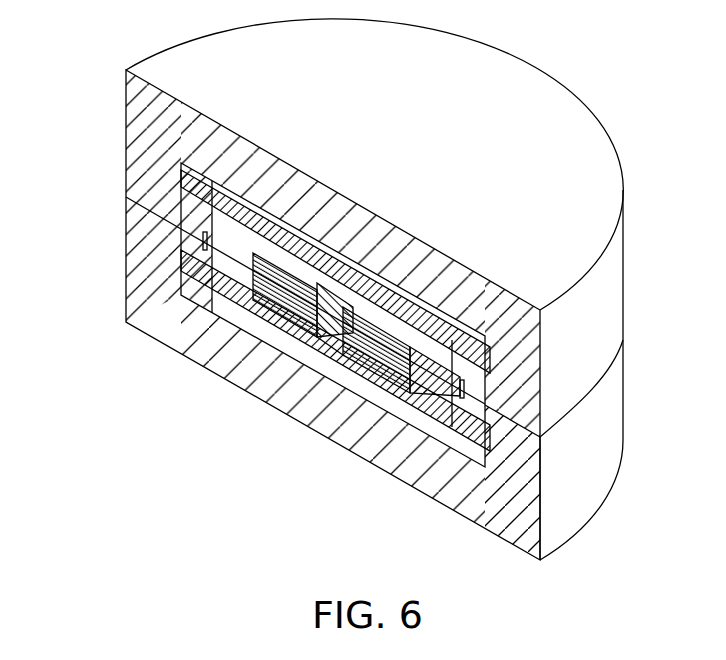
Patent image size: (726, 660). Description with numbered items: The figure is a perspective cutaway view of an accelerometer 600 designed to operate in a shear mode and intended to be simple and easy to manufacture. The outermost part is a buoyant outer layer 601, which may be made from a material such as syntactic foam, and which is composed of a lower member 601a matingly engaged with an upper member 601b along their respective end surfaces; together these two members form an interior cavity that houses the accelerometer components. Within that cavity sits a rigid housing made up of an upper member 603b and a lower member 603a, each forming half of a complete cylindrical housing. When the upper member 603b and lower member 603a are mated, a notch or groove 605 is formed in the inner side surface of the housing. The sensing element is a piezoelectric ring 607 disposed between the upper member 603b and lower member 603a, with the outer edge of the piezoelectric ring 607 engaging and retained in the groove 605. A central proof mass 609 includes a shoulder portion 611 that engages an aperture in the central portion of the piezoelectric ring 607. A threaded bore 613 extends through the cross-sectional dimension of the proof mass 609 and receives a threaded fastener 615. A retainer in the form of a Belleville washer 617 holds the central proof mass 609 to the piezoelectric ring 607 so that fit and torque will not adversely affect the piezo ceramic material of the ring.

The accelerometer 600 is at (77, 110).
The buoyant outer layer 601 is at (543, 106).
The lower member 601a is at (604, 431).
The upper member 601b is at (624, 264).
The lower member 603a is at (193, 261).
The upper member 603b is at (193, 186).
The groove 605 is at (460, 405).
The piezoelectric ring 607 is at (182, 297).
The central proof mass 609 is at (262, 312).
The shoulder portion 611 is at (384, 366).
The threaded bore 613 is at (325, 338).
The threaded fastener 615 is at (322, 340).
The Belleville washer 617 is at (400, 328).